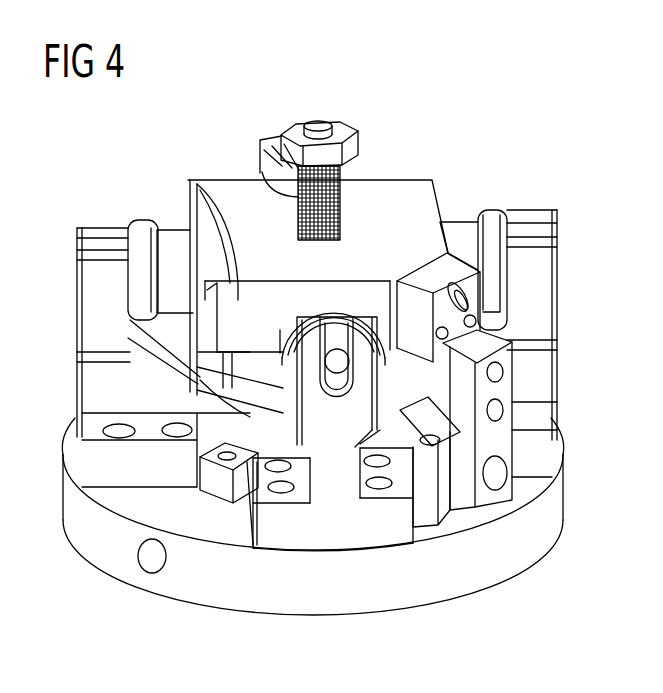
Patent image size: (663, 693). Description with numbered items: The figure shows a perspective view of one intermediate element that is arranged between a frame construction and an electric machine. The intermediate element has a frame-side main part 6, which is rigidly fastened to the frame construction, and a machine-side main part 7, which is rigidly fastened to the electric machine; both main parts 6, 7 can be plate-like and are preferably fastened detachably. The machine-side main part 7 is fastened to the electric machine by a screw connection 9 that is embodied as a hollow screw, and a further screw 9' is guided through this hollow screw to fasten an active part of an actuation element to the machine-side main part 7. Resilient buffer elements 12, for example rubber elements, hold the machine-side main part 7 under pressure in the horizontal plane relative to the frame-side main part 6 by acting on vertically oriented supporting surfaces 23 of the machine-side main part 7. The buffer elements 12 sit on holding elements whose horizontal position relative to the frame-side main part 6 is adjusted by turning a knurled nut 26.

The frame-side main part 6 is at (519, 557).
The machine-side main part 7 is at (394, 180).
The screw connection 9 is at (277, 188).
The screw 9' is at (319, 106).
The buffer element 12 is at (170, 229).
The supporting surface 23 is at (189, 181).
The knurled nut 26 is at (140, 220).